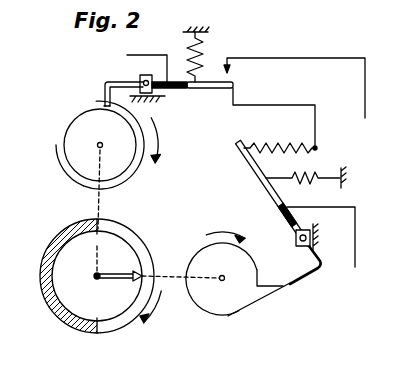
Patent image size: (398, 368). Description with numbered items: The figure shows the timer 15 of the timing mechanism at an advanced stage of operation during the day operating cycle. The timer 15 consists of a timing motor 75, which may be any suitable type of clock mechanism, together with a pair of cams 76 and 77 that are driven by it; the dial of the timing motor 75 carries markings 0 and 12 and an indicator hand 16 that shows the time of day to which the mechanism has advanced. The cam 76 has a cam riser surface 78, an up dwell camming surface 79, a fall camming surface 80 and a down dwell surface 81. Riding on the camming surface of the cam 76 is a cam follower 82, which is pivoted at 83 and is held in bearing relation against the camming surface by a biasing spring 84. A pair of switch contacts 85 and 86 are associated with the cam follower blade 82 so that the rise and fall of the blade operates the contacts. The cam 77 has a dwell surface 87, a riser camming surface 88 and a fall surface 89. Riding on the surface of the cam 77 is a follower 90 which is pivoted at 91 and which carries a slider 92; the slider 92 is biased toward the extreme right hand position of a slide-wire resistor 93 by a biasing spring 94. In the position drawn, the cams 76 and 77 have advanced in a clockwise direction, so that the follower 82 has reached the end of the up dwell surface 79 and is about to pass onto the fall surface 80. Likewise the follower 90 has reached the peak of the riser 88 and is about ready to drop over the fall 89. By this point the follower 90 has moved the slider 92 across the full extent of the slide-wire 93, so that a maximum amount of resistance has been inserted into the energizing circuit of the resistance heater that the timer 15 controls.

The timer 15 is at (215, 178).
The dial 16 is at (97, 276).
The dial zero marking 0 is at (98, 239).
The dial twelve marking 12 is at (99, 312).
The timing motor 75 is at (90, 274).
The cam 76 is at (96, 169).
The cam 77 is at (211, 283).
The cam riser surface 78 is at (82, 189).
The up dwell camming surface 79 is at (142, 176).
The fall camming surface 80 is at (98, 106).
The down dwell surface 81 is at (68, 168).
The cam follower 82 is at (105, 84).
The pivot 83 is at (140, 78).
The biasing spring 84 is at (206, 48).
The switch contact 85 is at (233, 70).
The switch contact 86 is at (227, 93).
The dwell surface 87 is at (227, 318).
The riser camming surface 88 is at (268, 300).
The fall surface 89 is at (273, 284).
The follower 90 is at (308, 272).
The pivot 91 is at (297, 240).
The slider 92 is at (268, 193).
The slide-wire resistor 93 is at (275, 146).
The biasing spring 94 is at (318, 174).